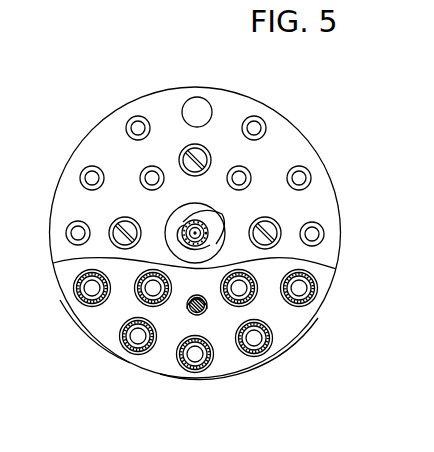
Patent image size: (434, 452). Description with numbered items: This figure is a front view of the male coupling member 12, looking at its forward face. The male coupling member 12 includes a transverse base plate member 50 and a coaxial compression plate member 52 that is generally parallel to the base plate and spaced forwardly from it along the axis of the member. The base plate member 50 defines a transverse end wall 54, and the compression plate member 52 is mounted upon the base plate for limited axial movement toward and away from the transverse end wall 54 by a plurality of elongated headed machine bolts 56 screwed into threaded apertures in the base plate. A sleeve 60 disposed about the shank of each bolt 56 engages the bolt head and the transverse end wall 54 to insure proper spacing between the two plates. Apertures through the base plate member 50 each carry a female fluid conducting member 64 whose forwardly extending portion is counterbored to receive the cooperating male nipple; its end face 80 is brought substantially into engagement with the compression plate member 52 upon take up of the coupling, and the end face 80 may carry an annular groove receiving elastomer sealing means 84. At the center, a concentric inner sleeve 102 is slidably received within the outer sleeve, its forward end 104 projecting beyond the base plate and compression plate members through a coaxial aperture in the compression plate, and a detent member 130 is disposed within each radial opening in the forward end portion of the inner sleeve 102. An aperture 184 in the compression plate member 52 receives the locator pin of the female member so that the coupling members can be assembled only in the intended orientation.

The male coupling member 12 is at (152, 90).
The base plate member 50 is at (312, 324).
The compression plate member 52 is at (262, 100).
The transverse end wall 54 is at (100, 334).
The headed machine bolts 56 is at (206, 150).
The sleeve 60 is at (188, 312).
The female fluid conducting member 64 is at (208, 367).
The end face 80 is at (265, 352).
The elastomer sealing means 84 is at (262, 341).
The inner sleeve 102 is at (183, 219).
The forward end of the inner sleeve 104 is at (208, 243).
The detent member 130 is at (212, 214).
The aperture 184 is at (197, 100).